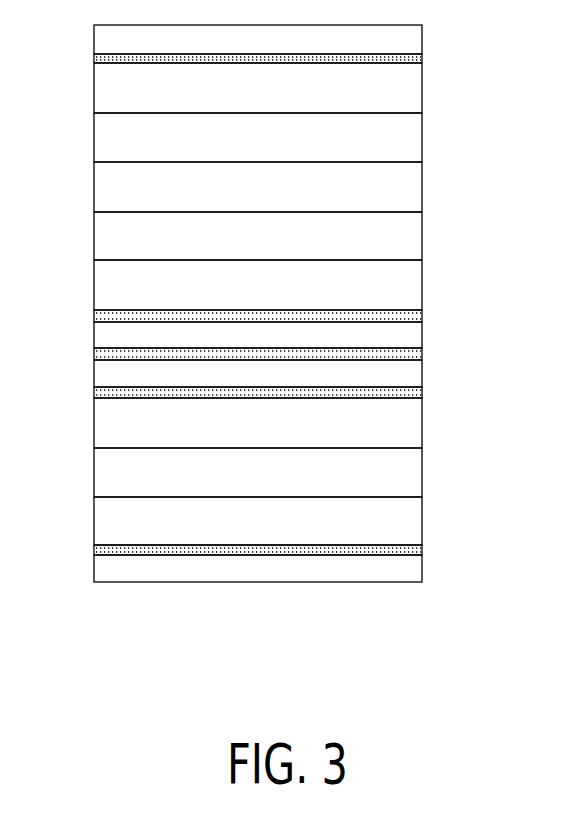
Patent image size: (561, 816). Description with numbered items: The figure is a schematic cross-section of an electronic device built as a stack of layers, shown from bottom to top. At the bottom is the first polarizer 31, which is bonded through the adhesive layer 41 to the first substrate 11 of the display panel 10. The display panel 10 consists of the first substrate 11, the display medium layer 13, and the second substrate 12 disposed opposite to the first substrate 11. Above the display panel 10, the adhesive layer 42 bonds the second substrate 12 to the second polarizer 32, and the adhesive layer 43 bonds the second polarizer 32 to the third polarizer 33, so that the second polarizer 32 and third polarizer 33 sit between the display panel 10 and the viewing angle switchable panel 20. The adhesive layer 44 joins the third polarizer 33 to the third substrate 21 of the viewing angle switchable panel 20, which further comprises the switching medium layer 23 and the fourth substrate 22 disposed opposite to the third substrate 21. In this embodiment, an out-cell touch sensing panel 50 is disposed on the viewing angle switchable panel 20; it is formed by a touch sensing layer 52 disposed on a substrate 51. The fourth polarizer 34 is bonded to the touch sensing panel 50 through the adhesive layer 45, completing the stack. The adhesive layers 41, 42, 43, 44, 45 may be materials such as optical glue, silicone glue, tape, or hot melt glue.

The display panel 10 is at (314, 471).
The first substrate 11 is at (289, 521).
The second substrate 12 is at (422, 425).
The display medium layer 13 is at (422, 470).
The viewing angle switchable panel 20 is at (314, 236).
The third substrate 21 is at (289, 285).
The fourth substrate 22 is at (422, 183).
The switching medium layer 23 is at (422, 230).
The first polarizer 31 is at (422, 568).
The second polarizer 32 is at (422, 372).
The third polarizer 33 is at (422, 335).
The fourth polarizer 34 is at (422, 38).
The adhesive layer 41 is at (98, 549).
The adhesive layer 42 is at (98, 392).
The adhesive layer 43 is at (98, 353).
The adhesive layer 44 is at (98, 315).
The adhesive layer 45 is at (98, 58).
The out-cell touch sensing panel 50 is at (314, 112).
The substrate 51 is at (289, 137).
The touch sensing layer 52 is at (422, 87).